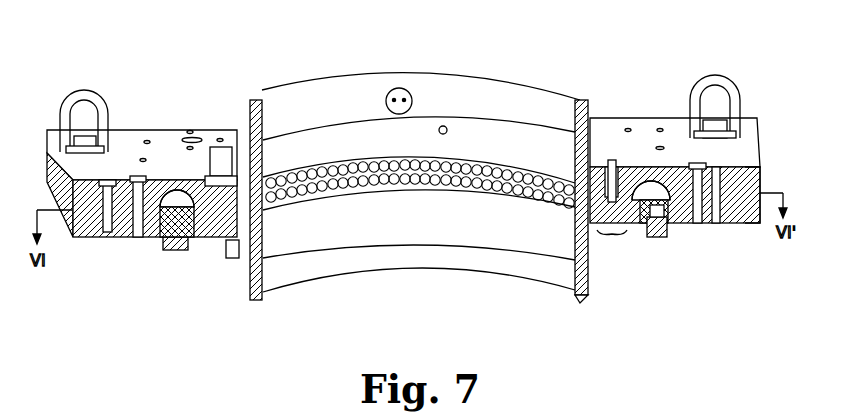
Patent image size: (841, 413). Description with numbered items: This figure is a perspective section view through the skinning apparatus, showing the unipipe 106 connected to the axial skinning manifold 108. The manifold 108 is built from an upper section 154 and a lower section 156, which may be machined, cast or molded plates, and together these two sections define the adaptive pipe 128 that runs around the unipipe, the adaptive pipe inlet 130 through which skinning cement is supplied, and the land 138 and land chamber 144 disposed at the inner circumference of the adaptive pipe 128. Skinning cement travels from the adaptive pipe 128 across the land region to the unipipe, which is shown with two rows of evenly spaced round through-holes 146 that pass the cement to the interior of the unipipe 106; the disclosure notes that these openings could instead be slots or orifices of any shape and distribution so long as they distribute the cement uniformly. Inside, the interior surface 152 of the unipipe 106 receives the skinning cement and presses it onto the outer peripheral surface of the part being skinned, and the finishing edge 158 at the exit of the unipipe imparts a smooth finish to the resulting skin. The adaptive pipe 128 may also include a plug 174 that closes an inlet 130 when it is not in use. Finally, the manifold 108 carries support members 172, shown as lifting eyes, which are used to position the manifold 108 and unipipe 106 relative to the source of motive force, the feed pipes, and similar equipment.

The unipipe 106 is at (375, 182).
The manifold 108 is at (150, 129).
The adaptive pipe 128 is at (666, 229).
The adaptive pipe inlet 130 is at (652, 190).
The land 138 is at (612, 236).
The land chamber 144 is at (606, 183).
The through-holes 146 is at (443, 126).
The interior surface 152 is at (562, 248).
The upper section 154 is at (705, 188).
The lower section 156 is at (743, 224).
The finishing edge 158 is at (580, 300).
The support members 172 is at (716, 74).
The plug 174 is at (665, 240).